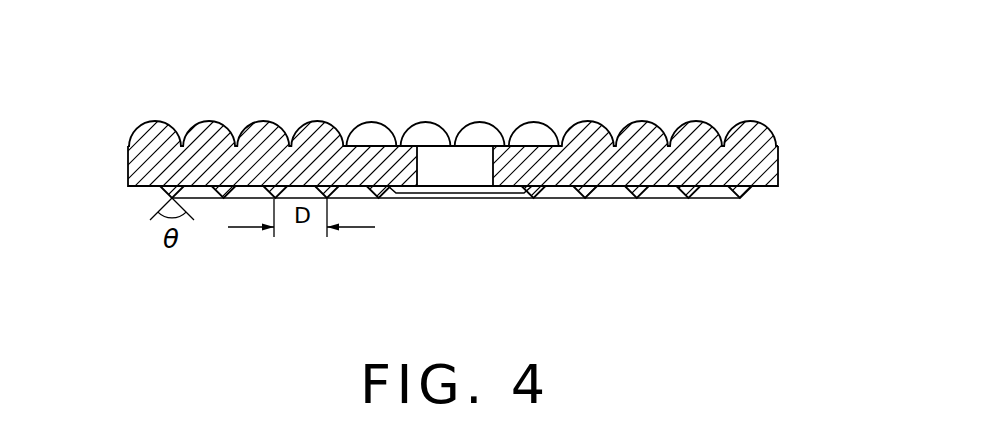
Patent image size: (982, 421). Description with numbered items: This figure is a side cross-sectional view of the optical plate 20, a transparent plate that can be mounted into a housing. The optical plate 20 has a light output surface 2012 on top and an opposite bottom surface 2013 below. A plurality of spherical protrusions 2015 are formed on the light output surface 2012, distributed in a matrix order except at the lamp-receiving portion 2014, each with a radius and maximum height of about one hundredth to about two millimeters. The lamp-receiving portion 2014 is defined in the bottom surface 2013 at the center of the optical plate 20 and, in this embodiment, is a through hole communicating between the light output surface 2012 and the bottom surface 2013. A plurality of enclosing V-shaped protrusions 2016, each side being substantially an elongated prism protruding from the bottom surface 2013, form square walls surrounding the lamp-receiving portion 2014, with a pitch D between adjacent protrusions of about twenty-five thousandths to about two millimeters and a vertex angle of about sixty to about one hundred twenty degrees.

The optical plate 20 is at (138, 73).
The light output surface 2012 is at (509, 146).
The bottom surface 2013 is at (397, 188).
The lamp-receiving portion 2014 is at (443, 158).
The spherical protrusion 2015 is at (693, 123).
The enclosing V-shaped protrusion 2016 is at (585, 198).